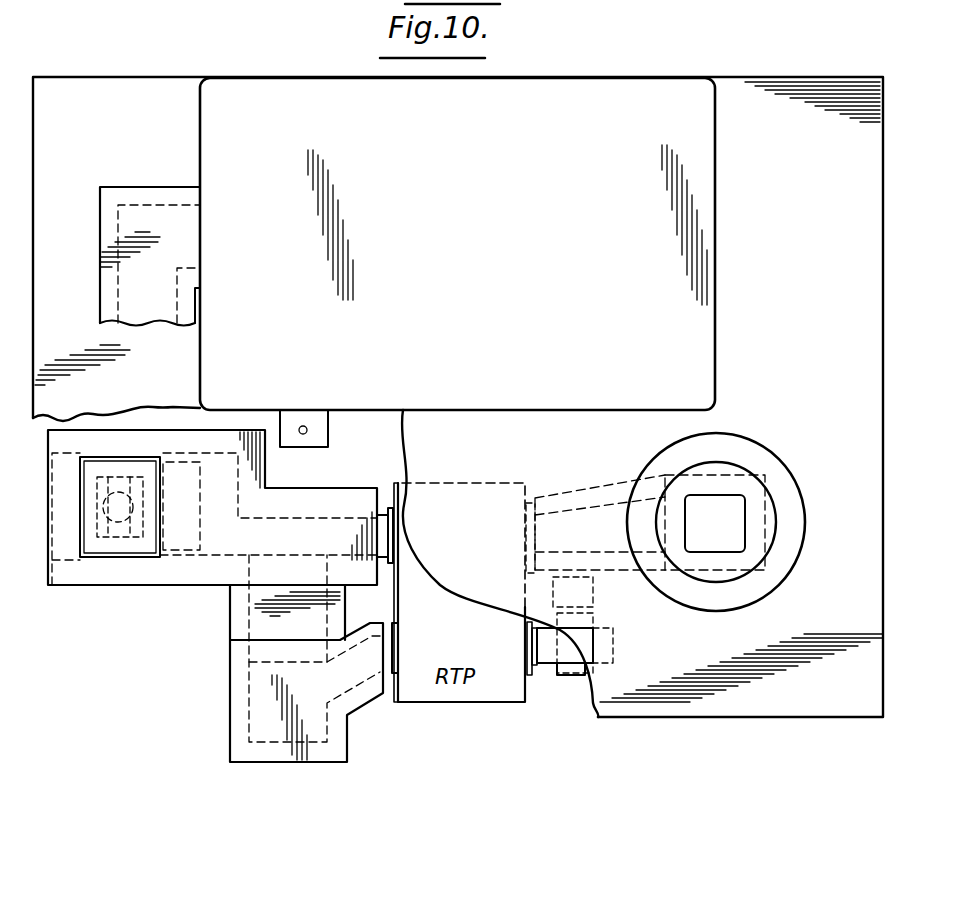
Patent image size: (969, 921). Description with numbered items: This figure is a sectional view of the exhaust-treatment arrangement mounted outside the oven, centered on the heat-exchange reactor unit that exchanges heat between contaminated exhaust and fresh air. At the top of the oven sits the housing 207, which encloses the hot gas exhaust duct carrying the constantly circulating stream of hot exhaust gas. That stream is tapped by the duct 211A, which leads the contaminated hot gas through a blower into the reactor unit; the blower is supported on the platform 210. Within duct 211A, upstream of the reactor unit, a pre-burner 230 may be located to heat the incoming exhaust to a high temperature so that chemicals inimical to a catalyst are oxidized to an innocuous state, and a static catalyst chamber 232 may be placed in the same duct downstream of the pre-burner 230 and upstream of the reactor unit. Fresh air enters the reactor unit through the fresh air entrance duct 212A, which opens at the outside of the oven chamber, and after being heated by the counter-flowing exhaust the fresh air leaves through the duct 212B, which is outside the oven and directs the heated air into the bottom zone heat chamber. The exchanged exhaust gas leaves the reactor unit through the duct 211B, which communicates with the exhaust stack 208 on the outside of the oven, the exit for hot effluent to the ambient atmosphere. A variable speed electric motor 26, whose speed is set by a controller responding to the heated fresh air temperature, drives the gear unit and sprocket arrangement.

The variable speed electric motor 26 is at (575, 677).
The housing 207 is at (292, 58).
The exhaust stack 208 is at (760, 447).
The platform 210 is at (790, 708).
The duct 211A is at (133, 190).
The duct 211B is at (625, 462).
The fresh air entrance duct 212A is at (615, 650).
The duct 212B is at (292, 762).
The pre-burner 230 is at (118, 492).
The static catalyst chamber 232 is at (183, 542).